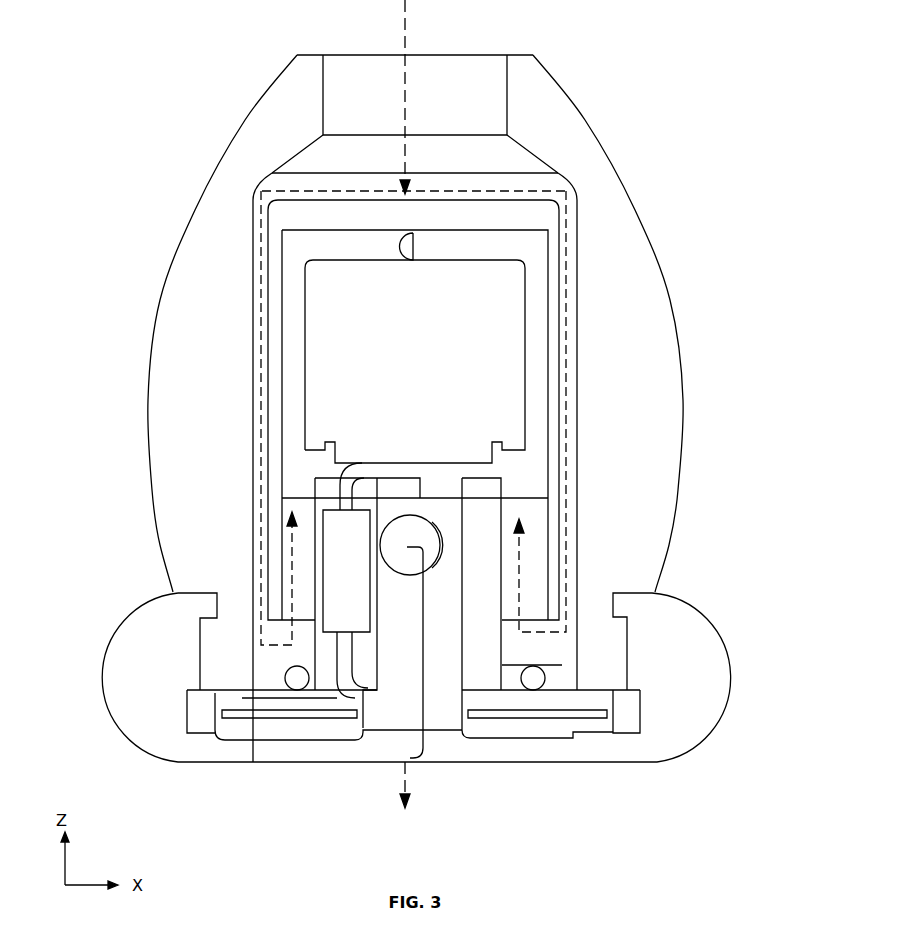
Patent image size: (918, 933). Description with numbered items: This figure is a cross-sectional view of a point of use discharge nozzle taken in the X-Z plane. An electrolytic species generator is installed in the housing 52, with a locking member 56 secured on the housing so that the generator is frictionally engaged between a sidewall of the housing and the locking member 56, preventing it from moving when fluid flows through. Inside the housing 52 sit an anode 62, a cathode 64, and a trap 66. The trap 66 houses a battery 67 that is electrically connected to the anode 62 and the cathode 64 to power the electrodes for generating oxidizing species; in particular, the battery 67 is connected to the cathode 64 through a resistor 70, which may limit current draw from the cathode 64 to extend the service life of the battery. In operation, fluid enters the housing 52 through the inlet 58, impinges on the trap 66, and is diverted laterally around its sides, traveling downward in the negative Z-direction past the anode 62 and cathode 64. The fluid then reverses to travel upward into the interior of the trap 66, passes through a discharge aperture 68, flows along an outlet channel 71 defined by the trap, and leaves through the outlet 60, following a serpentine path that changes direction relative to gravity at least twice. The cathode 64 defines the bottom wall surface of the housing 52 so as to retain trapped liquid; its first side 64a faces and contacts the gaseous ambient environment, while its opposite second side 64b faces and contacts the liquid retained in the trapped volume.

The housing 52 is at (642, 218).
The locking member 56 is at (736, 652).
The inlet 58 is at (463, 38).
The outlet 60 is at (432, 796).
The anode 62 is at (284, 678).
The cathode 64 is at (254, 720).
The first side 64a is at (550, 720).
The second side 64b is at (528, 707).
The trap 66 is at (273, 588).
The battery 67 is at (414, 359).
The discharge aperture 68 is at (411, 545).
The resistor 70 is at (355, 583).
The outlet channel 71 is at (425, 640).